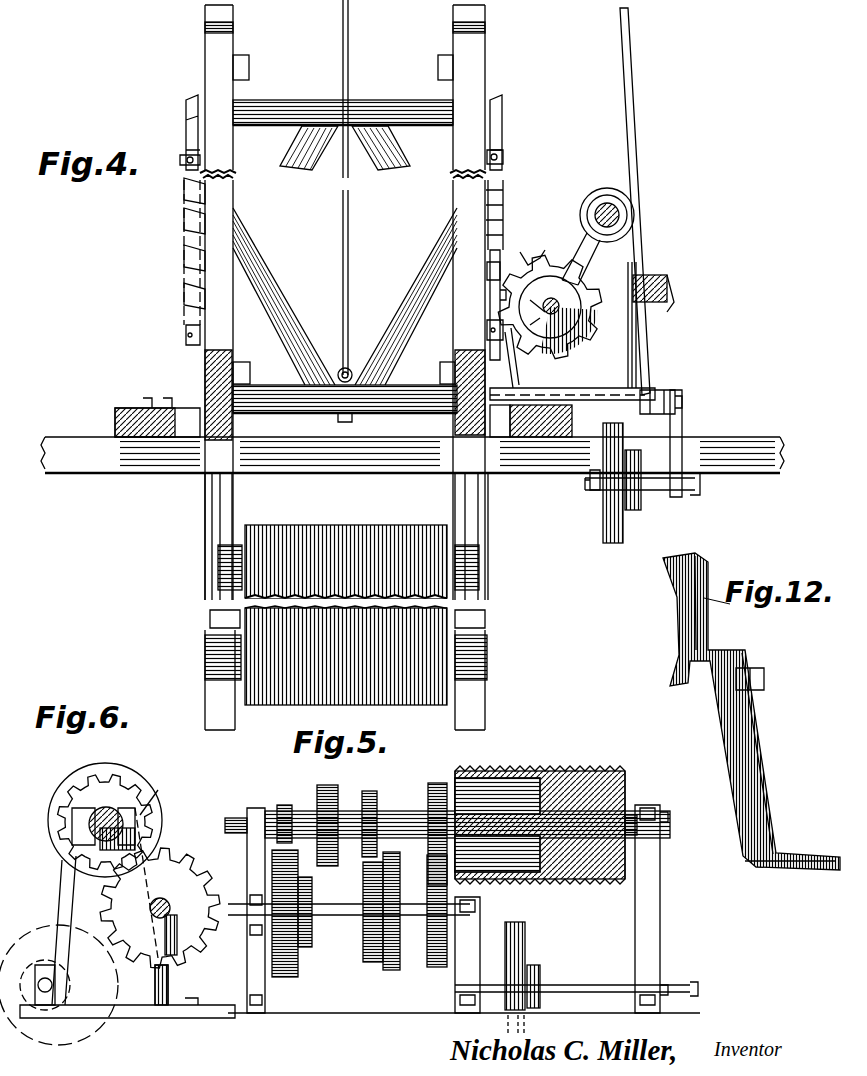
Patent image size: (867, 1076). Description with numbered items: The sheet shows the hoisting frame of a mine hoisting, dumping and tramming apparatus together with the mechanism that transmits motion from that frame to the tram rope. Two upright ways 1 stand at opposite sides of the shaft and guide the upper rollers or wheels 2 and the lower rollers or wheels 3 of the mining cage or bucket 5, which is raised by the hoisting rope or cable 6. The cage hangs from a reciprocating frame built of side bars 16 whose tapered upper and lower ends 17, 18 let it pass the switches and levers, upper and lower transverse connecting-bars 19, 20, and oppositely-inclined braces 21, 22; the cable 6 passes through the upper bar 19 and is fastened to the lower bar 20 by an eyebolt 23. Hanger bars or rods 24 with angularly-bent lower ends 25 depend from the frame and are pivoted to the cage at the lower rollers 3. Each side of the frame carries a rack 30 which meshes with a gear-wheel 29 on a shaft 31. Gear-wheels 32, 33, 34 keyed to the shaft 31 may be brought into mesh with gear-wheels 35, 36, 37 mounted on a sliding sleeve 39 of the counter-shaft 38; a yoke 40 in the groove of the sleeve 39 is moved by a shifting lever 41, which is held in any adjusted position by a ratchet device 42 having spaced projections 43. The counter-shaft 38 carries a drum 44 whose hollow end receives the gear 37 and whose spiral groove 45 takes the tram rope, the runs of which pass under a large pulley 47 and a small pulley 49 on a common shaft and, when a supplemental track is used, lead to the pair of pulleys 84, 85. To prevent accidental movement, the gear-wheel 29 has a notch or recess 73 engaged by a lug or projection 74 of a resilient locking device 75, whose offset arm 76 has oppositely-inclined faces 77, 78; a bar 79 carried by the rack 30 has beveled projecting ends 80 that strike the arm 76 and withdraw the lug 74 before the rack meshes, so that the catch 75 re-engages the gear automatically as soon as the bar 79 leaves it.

In FIG. 4, the upright ways 1 is at (205, 15).
In FIG. 4, the upper rollers or wheels 2 is at (218, 548).
In FIG. 4, the lower rollers or wheels 3 is at (205, 648).
In FIG. 4, the mining cage or bucket 5 is at (346, 615).
In FIG. 4, the hoisting rope or cable 6 is at (348, 292).
In FIG. 4, the side bars 16 is at (225, 206).
In FIG. 4, the upper ends of side bars 17 is at (233, 30).
In FIG. 4, the lower ends of side bars 18 is at (233, 428).
In FIG. 4, the upper transverse connecting-bar 19 is at (375, 100).
In FIG. 4, the lower transverse connecting-bar 20 is at (403, 416).
In FIG. 4, the upper inclined braces 21 is at (282, 152).
In FIG. 4, the lower inclined braces 22 is at (290, 292).
In FIG. 4, the eyebolt 23 is at (350, 368).
In FIG. 4, the hanger bars or rods 24 is at (205, 505).
In FIG. 4, the angularly-bent lower ends 25 is at (208, 615).
In FIG. 4, the gear-wheel 29 is at (538, 258).
In FIG. 5, the gear-wheel 29 is at (286, 977).
In FIG. 4, the rack 30 is at (184, 246).
In FIG. 4, the shaft 31 is at (549, 306).
In FIG. 6, the shaft 31 is at (160, 898).
In FIG. 5, the shaft 31 is at (338, 918).
In FIG. 5, the gear-wheel 32 is at (370, 962).
In FIG. 5, the gear-wheel 33 is at (390, 970).
In FIG. 6, the gear-wheel 34 is at (160, 908).
In FIG. 5, the gear-wheel 34 is at (435, 967).
In FIG. 5, the gear-wheel 35 is at (337, 778).
In FIG. 5, the gear-wheel 36 is at (372, 791).
In FIG. 6, the gear-wheel 37 is at (162, 868).
In FIG. 5, the gear-wheel 37 is at (445, 775).
In FIG. 4, the counter-shaft 38 is at (580, 208).
In FIG. 6, the counter-shaft 38 is at (103, 833).
In FIG. 5, the counter-shaft 38 is at (236, 818).
In FIG. 4, the sliding sleeve 39 is at (607, 263).
In FIG. 6, the sliding sleeve 39 is at (105, 822).
In FIG. 5, the sliding sleeve 39 is at (402, 808).
In FIG. 4, the yoke 40 is at (605, 200).
In FIG. 5, the yoke 40 is at (283, 805).
In FIG. 4, the shifting lever 41 is at (635, 150).
In FIG. 4, the ratchet device 42 is at (669, 302).
In FIG. 4, the projections 43 is at (655, 275).
In FIG. 6, the drum 44 is at (135, 773).
In FIG. 5, the drum 44 is at (632, 780).
In FIG. 5, the spiral groove 45 is at (572, 770).
In FIG. 6, the large pulley 47 is at (59, 950).
In FIG. 5, the large pulley 47 is at (527, 950).
In FIG. 5, the small pulley 49 is at (542, 975).
In FIG. 4, the notch or recess 73 is at (580, 306).
In FIG. 4, the lug or projection 74 is at (532, 314).
In FIG. 12, the lug or projection 74 is at (760, 688).
In FIG. 4, the resilient locking device 75 is at (521, 358).
In FIG. 12, the resilient locking device 75 is at (765, 752).
In FIG. 12, the arm 76 is at (676, 622).
In FIG. 4, the upper inclined face 77 is at (487, 265).
In FIG. 12, the upper inclined face 77 is at (696, 560).
In FIG. 4, the lower inclined face 78 is at (490, 305).
In FIG. 12, the lower inclined face 78 is at (683, 683).
In FIG. 4, the bar 79 is at (186, 112).
In FIG. 4, the beveled projecting ends 80 is at (198, 100).
In FIG. 4, the pulley 84 is at (636, 510).
In FIG. 4, the pulley 85 is at (603, 500).